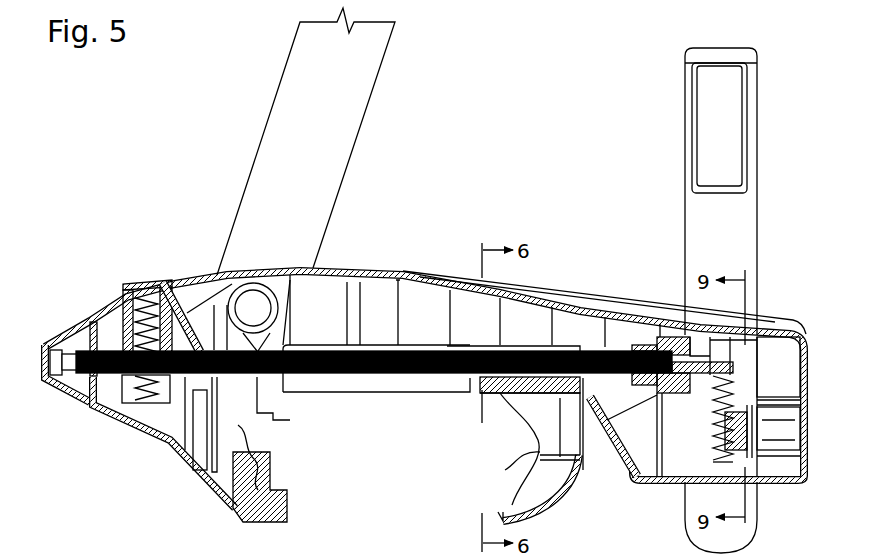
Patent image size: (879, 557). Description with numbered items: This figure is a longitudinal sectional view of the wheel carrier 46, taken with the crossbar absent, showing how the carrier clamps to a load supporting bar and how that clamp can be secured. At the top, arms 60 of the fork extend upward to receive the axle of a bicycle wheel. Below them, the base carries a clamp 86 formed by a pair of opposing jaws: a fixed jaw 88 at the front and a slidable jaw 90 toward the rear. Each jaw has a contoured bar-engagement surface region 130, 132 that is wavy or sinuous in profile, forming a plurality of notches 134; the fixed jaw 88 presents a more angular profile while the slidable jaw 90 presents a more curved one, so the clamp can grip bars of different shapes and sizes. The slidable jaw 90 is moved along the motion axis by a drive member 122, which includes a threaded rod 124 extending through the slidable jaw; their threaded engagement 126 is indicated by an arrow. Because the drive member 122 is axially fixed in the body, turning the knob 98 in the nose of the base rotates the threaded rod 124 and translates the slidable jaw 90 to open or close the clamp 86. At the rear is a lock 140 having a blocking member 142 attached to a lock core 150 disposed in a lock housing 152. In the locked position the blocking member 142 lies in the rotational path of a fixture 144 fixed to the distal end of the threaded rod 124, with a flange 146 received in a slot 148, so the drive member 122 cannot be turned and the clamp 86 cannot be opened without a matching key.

The wheel carrier 46 is at (118, 242).
The arms 60 is at (318, 175).
The knob 98 is at (57, 342).
The drive member 122 is at (44, 366).
The threaded rod 124 is at (380, 378).
The threaded engagement 126 is at (477, 383).
The fixed jaw 88 is at (258, 522).
The bar-engagement surface region 130 is at (274, 484).
The notches 134 is at (270, 440).
The clamp 86 is at (367, 504).
The slidable jaw 90 is at (527, 519).
The bar-engagement surface region 132 is at (508, 498).
The fixture 144 is at (683, 396).
The flange 146 is at (700, 361).
The slot 148 is at (700, 355).
The lock core 150 is at (723, 444).
The blocking member 142 is at (717, 394).
The lock housing 152 is at (797, 452).
The lock 140 is at (778, 378).